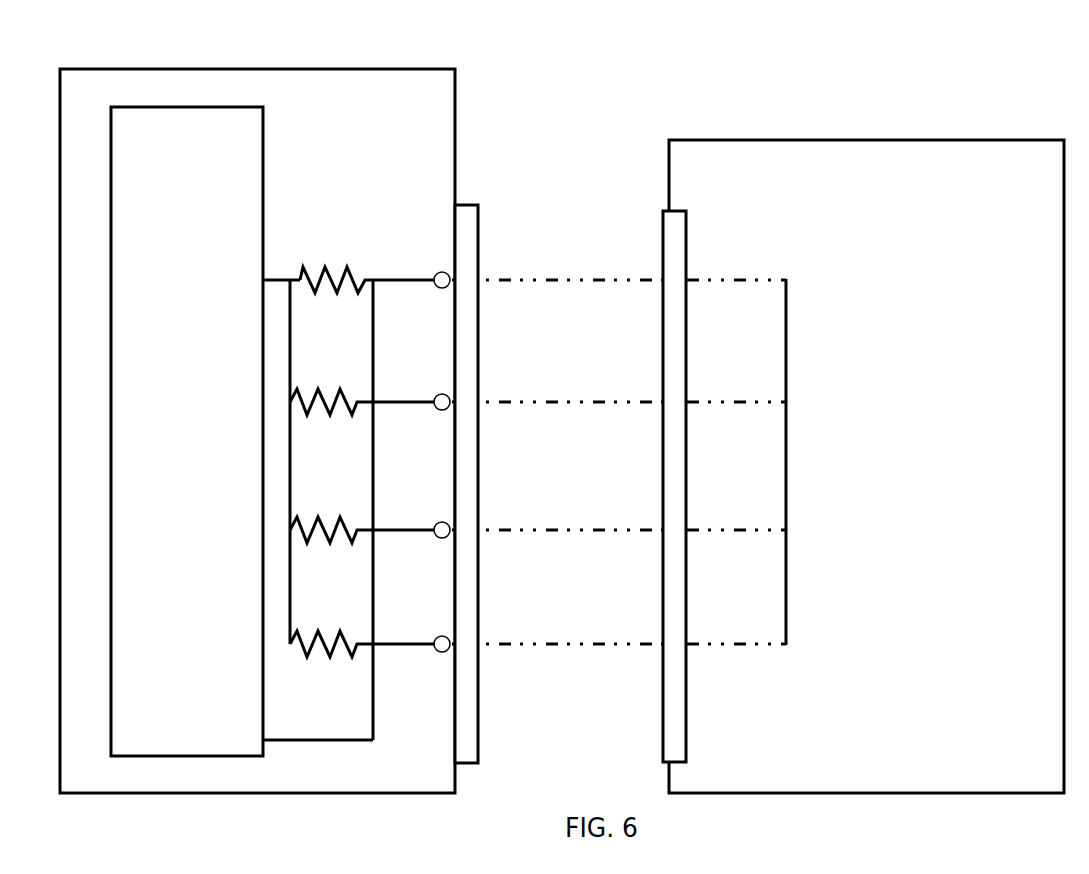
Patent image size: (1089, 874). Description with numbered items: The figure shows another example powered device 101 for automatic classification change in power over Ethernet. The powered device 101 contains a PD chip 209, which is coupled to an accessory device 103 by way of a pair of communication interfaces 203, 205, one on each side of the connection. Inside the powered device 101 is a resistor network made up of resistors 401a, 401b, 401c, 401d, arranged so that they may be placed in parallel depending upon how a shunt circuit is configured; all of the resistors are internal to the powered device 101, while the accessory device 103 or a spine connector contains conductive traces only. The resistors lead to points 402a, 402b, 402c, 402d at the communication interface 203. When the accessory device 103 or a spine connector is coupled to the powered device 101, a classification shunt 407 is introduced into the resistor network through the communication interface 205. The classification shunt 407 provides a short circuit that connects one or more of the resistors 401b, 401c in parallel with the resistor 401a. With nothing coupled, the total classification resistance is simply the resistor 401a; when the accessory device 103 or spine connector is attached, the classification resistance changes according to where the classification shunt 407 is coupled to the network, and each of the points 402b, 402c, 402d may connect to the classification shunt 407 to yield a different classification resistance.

The powered device 101 is at (149, 69).
The accessory device 103 is at (800, 140).
The communication interface 203 is at (479, 213).
The communication interface 205 is at (689, 217).
The PD chip 209 is at (206, 474).
The resistor 401a is at (343, 267).
The resistor 401b is at (343, 389).
The resistor 401c is at (343, 517).
The resistor 401d is at (343, 631).
The point 402a is at (441, 272).
The point 402b is at (441, 394).
The point 402c is at (441, 522).
The point 402d is at (441, 636).
The classification shunt 407 is at (585, 281).